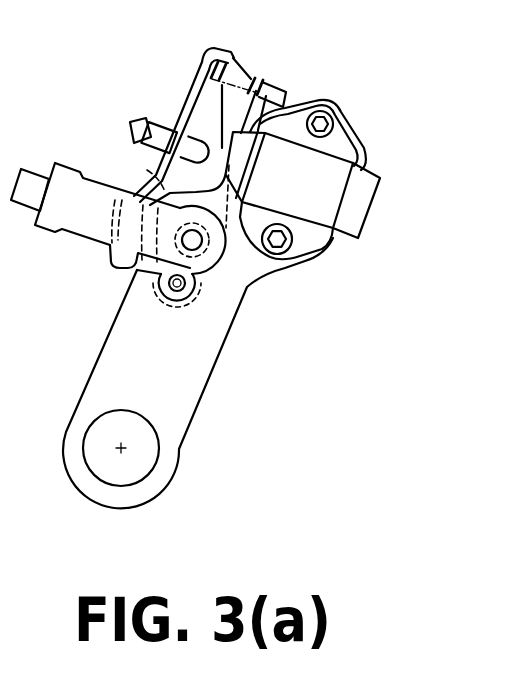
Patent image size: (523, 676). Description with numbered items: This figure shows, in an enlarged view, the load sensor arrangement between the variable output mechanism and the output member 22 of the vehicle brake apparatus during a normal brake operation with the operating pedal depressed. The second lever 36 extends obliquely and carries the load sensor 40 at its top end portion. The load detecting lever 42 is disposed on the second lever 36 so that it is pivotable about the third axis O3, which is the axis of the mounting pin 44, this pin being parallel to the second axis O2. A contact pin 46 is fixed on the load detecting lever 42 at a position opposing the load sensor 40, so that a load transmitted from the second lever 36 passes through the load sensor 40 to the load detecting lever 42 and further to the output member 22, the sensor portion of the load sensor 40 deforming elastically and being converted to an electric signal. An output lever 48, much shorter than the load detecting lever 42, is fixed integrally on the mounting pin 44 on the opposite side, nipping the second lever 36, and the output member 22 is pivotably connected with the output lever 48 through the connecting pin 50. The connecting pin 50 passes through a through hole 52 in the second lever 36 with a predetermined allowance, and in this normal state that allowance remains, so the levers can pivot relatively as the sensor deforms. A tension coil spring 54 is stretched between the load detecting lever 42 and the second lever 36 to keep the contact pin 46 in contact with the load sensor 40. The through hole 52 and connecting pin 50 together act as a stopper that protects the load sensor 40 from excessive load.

The output member 22 is at (56, 195).
The second lever 36 is at (185, 404).
The load sensor 40 is at (365, 190).
The load detecting lever 42 is at (190, 98).
The mounting pin 44 is at (138, 277).
The contact pin 46 is at (205, 148).
The output lever 48 is at (196, 277).
The connecting pin 50 is at (203, 241).
The through hole 52 is at (148, 170).
The tension coil spring 54 is at (253, 84).
The second axis O2 is at (120, 450).
The third axis O3 is at (166, 294).